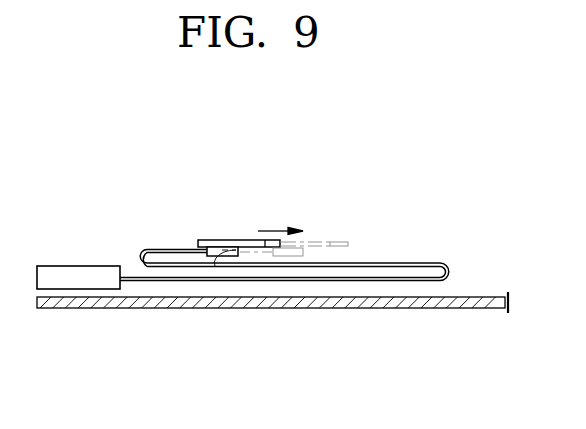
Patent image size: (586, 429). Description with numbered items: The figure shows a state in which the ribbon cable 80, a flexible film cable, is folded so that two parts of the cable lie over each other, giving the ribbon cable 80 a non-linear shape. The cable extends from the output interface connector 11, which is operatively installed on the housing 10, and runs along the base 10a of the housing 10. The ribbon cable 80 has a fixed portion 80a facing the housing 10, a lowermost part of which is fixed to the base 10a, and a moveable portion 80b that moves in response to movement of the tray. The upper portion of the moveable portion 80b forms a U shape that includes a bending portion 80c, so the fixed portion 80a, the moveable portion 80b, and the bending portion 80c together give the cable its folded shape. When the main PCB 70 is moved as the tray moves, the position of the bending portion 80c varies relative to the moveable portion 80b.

The housing 10 is at (272, 330).
The base 10a is at (283, 309).
The output interface connector 11 is at (53, 272).
The main PCB 70 is at (211, 240).
The ribbon cable 80 is at (383, 207).
The fixed portion 80a is at (425, 277).
The moveable portion 80b is at (391, 263).
The bending portion 80c is at (148, 252).